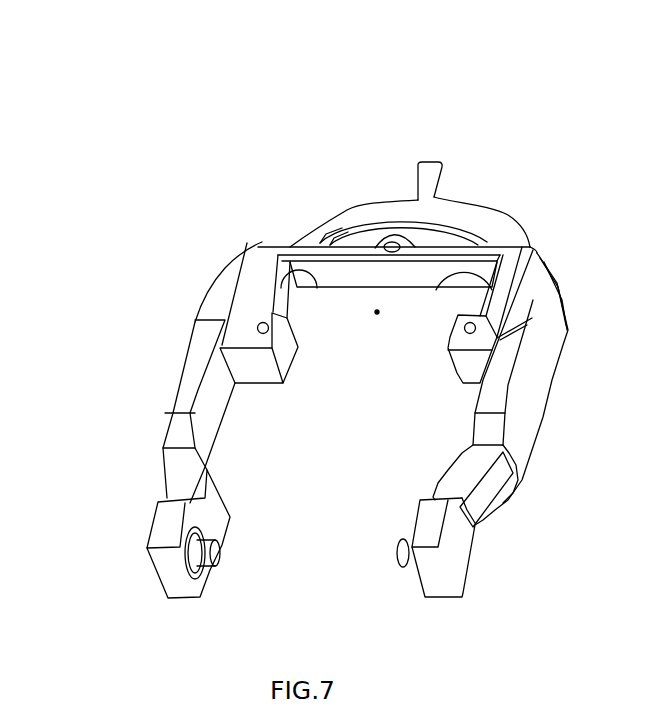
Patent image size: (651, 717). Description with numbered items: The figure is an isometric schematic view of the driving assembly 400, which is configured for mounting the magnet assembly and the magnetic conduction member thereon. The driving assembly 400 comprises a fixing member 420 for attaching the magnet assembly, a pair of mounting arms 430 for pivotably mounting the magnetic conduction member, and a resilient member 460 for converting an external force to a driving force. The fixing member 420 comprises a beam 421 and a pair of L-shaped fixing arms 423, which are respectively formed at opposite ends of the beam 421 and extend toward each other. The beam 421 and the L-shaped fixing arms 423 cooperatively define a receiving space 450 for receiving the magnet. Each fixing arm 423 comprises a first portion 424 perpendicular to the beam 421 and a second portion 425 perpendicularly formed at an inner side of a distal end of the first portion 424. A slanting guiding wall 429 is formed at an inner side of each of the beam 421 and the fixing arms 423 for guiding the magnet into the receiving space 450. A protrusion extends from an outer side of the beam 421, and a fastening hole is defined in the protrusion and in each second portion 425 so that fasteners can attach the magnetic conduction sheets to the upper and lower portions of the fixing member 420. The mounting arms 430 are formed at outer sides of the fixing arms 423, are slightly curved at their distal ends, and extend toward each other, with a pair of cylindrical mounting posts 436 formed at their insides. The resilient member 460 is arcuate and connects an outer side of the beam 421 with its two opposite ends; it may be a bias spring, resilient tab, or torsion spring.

The driving assembly 400 is at (378, 48).
The fixing member 420 is at (97, 150).
The beam 421 is at (347, 247).
The L-shaped fixing arm 423 is at (152, 195).
The first portion 424 is at (260, 262).
The second portion 425 is at (259, 322).
The slanting guiding wall 429 is at (283, 278).
The mounting arm 430 is at (185, 364).
The mounting post 436 is at (210, 508).
The receiving space 450 is at (372, 316).
The resilient member 460 is at (421, 198).